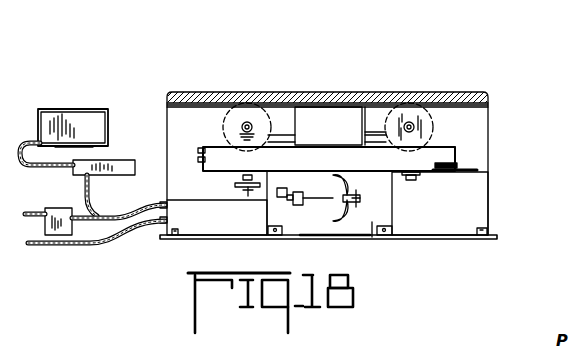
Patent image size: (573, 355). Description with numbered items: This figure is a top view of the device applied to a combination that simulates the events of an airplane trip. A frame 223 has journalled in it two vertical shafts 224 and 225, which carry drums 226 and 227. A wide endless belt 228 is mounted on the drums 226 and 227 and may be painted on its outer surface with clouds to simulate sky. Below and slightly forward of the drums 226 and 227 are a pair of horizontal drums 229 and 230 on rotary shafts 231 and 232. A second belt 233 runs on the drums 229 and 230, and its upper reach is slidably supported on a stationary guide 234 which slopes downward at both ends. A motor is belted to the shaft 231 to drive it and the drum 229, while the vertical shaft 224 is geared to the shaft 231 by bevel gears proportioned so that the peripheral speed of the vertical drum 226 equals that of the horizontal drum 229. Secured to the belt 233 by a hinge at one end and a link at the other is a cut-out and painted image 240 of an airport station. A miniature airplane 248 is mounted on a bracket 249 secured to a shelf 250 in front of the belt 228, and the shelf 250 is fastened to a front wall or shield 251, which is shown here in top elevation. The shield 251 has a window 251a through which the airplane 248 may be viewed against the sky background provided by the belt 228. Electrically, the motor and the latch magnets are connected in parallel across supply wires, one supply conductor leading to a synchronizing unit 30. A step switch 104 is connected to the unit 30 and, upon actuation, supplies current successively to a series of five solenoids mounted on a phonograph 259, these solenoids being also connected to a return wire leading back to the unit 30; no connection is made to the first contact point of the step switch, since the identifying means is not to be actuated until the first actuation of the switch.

The synchronizing unit 30 is at (60, 210).
The step switch 104 is at (127, 160).
The frame 223 is at (428, 101).
The vertical shaft 224 is at (253, 122).
The vertical shaft 225 is at (411, 125).
The drum 226 is at (240, 115).
The drum 227 is at (433, 117).
The wide endless belt 228 is at (319, 92).
The horizontal drum 229 is at (222, 173).
The horizontal drum 230 is at (445, 174).
The rotary shaft 231 is at (252, 196).
The rotary shaft 232 is at (418, 181).
The second belt 233 is at (380, 163).
The stationary guide 234 is at (352, 115).
The cut-out and painted image of an airport station 240 is at (474, 166).
The miniature airplane 248 is at (334, 192).
The bracket 249 is at (282, 197).
The shelf 250 is at (372, 238).
The front wall or shield 251 is at (199, 240).
The window 251a is at (335, 240).
The phonograph 259 is at (82, 109).